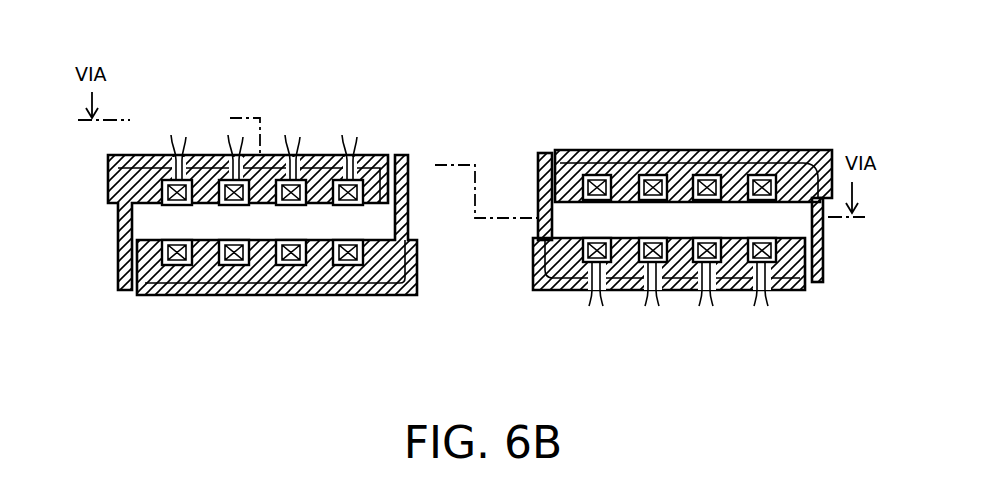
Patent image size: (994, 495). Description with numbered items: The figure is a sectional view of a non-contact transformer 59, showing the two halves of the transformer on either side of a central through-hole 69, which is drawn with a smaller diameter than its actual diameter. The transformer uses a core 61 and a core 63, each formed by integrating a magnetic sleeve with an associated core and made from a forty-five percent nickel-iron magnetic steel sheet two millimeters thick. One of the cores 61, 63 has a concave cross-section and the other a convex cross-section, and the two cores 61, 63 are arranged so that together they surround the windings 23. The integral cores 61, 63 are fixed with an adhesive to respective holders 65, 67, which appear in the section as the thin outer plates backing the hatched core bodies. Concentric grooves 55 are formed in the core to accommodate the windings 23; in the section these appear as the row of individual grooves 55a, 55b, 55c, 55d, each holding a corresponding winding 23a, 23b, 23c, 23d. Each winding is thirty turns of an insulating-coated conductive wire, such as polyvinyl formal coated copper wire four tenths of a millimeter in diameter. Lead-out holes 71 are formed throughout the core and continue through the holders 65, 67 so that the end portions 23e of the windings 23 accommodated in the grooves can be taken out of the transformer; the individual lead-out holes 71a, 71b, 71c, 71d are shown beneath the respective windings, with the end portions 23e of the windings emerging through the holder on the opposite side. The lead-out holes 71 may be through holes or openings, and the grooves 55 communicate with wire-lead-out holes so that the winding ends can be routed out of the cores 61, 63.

The non-contact transformer 59 is at (491, 78).
The central through-hole 69 is at (493, 170).
The holder 65 is at (198, 156).
The core 61 is at (402, 152).
The core 63 is at (318, 295).
The holder 67 is at (390, 295).
The windings 23 is at (357, 160).
The end portions of the windings 23e is at (176, 145).
The winding 23a is at (598, 201).
The winding 23b is at (653, 201).
The winding 23c is at (706, 201).
The winding 23d is at (760, 201).
The concentric grooves 55 is at (808, 84).
The concentric groove 55a is at (601, 174).
The concentric groove 55b is at (656, 174).
The concentric groove 55c is at (709, 174).
The concentric groove 55d is at (763, 174).
The lead-out holes 71 is at (172, 158).
The lead-out hole 71a is at (602, 300).
The lead-out hole 71b is at (656, 300).
The lead-out hole 71c is at (712, 300).
The lead-out hole 71d is at (766, 300).